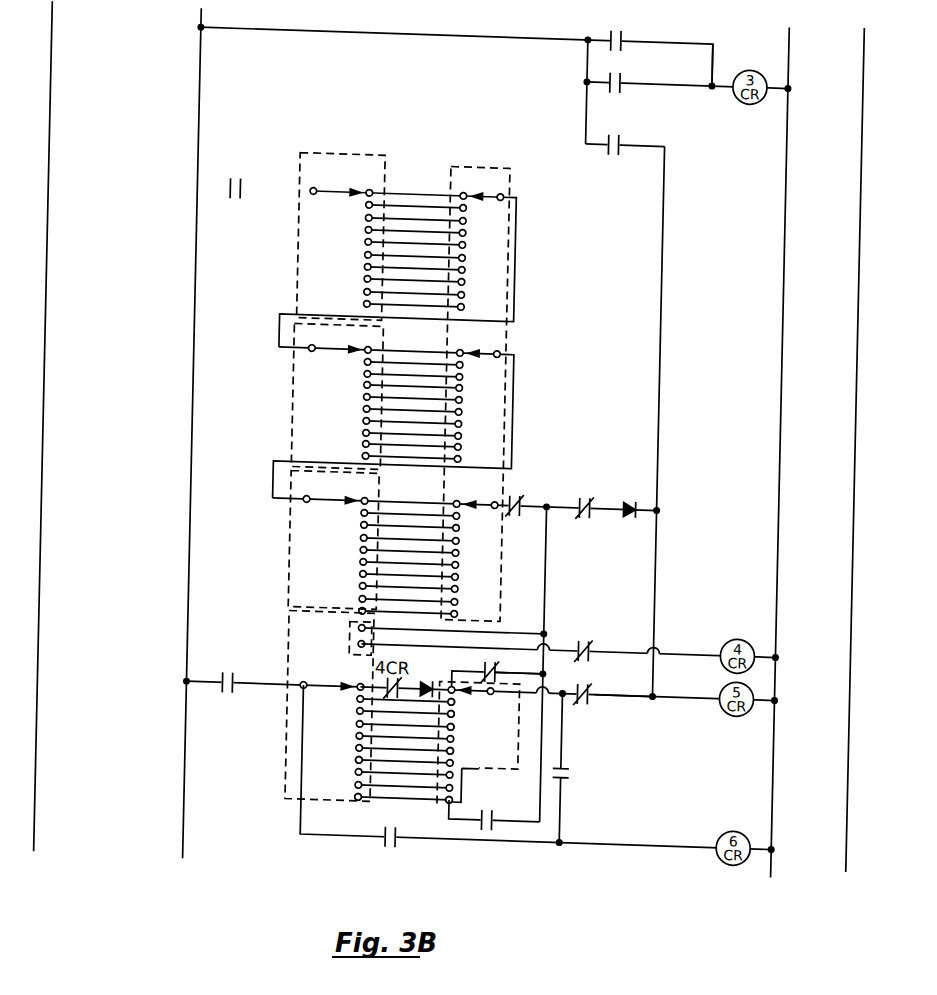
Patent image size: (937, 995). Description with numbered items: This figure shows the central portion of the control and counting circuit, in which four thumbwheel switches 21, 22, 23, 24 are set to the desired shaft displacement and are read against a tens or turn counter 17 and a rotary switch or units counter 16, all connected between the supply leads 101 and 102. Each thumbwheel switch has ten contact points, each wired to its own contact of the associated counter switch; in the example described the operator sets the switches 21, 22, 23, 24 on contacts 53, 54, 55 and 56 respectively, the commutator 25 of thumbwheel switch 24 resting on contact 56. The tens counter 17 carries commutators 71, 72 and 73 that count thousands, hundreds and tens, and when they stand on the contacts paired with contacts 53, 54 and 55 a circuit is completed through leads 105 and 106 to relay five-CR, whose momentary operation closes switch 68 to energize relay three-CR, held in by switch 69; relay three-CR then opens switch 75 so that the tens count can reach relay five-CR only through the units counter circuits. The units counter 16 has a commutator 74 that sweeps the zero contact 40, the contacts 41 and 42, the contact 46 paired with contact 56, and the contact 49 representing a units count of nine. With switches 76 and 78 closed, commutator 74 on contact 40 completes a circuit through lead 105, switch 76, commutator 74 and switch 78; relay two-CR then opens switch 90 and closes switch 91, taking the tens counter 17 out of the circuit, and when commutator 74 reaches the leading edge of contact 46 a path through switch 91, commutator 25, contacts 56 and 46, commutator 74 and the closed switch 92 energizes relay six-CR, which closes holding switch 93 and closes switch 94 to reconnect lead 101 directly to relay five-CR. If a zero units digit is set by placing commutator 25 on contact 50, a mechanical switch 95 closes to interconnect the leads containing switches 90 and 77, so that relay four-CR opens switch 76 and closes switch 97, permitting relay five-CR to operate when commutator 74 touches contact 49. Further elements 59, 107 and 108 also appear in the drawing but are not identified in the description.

The rotary switch 16 is at (486, 744).
The turn counter 17 is at (504, 170).
The thumbwheel switch 21 is at (294, 268).
The thumbwheel switch 22 is at (292, 405).
The thumbwheel switch 23 is at (292, 555).
The thumbwheel switch 24 is at (293, 742).
The commutator 25 is at (326, 694).
The contact 40 is at (460, 704).
The contact 41 is at (460, 716).
The contact 42 is at (460, 729).
The contact 46 is at (460, 753).
The contact 49 is at (465, 800).
The contact 50 is at (365, 706).
The contact 53 is at (362, 224).
The contact 54 is at (364, 390).
The contact 55 is at (364, 555).
The contact 56 is at (364, 764).
The contact 59 is at (364, 801).
The switch 68 is at (613, 44).
The switch 69 is at (613, 87).
The commutator 71 is at (491, 201).
The commutator 72 is at (489, 358).
The commutator 73 is at (487, 508).
The commutator 74 is at (500, 694).
The switch 75 is at (585, 514).
The switch 76 is at (488, 670).
The relay operated switch 77 is at (596, 652).
The switch 78 is at (586, 702).
The switch 90 is at (519, 514).
The switch 91 is at (230, 702).
The switch 92 is at (577, 778).
The switch 93 is at (402, 850).
The switch 94 is at (613, 150).
The mechanical switch 95 is at (354, 647).
The switch 97 is at (489, 822).
The lead 101 is at (192, 533).
The lead 102 is at (780, 474).
The lead 105 is at (230, 208).
The lead 106 is at (633, 512).
The conductor 107 is at (502, 672).
The conductor 108 is at (632, 694).